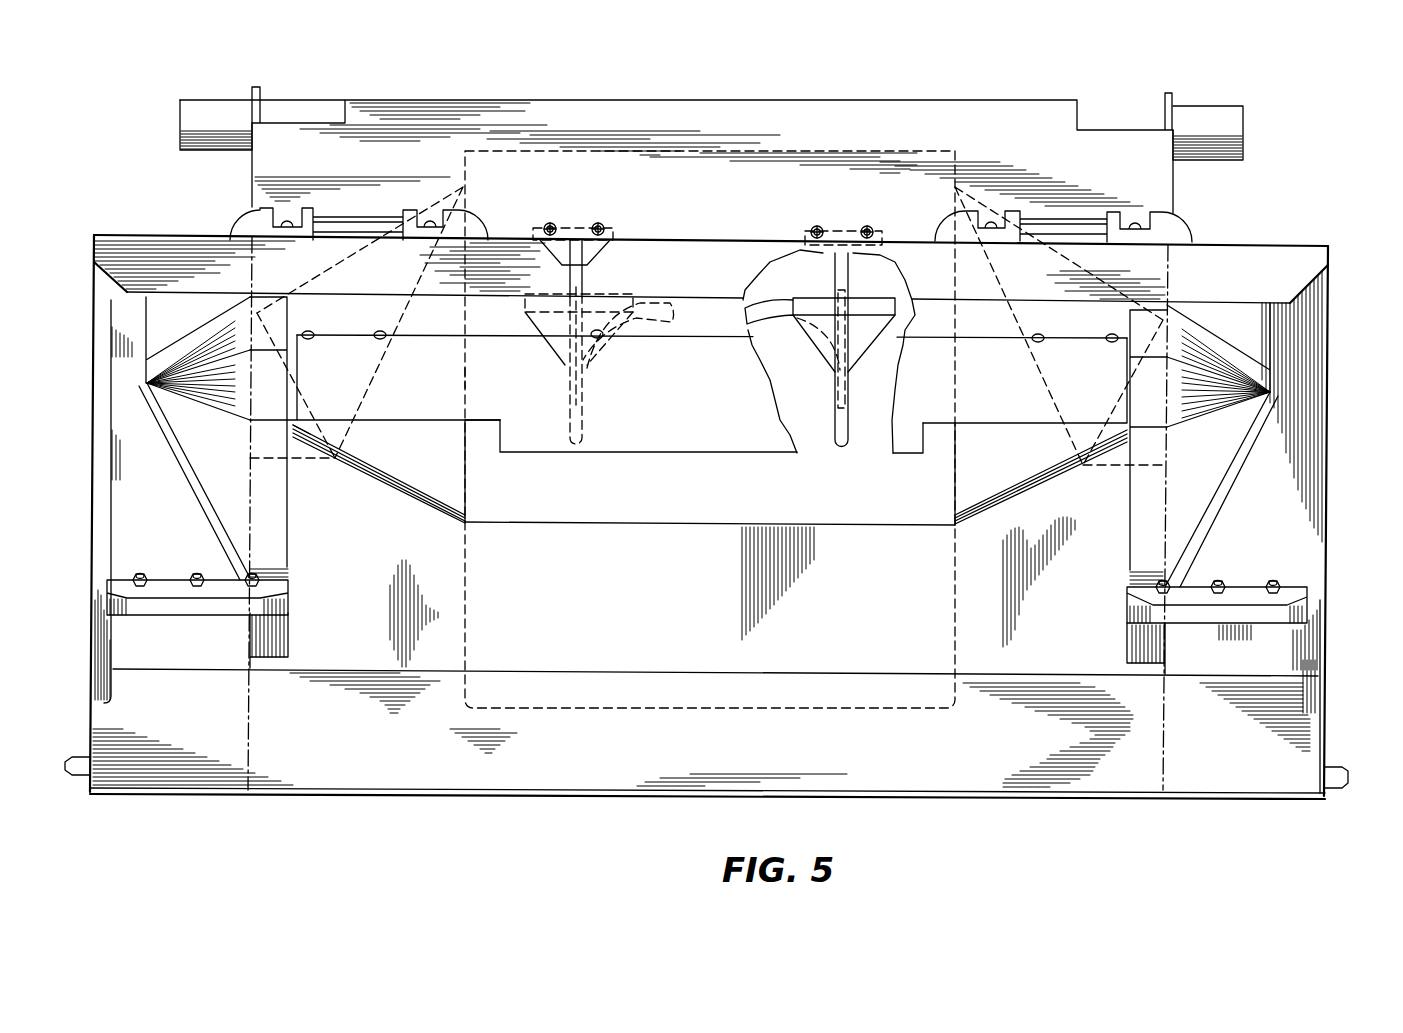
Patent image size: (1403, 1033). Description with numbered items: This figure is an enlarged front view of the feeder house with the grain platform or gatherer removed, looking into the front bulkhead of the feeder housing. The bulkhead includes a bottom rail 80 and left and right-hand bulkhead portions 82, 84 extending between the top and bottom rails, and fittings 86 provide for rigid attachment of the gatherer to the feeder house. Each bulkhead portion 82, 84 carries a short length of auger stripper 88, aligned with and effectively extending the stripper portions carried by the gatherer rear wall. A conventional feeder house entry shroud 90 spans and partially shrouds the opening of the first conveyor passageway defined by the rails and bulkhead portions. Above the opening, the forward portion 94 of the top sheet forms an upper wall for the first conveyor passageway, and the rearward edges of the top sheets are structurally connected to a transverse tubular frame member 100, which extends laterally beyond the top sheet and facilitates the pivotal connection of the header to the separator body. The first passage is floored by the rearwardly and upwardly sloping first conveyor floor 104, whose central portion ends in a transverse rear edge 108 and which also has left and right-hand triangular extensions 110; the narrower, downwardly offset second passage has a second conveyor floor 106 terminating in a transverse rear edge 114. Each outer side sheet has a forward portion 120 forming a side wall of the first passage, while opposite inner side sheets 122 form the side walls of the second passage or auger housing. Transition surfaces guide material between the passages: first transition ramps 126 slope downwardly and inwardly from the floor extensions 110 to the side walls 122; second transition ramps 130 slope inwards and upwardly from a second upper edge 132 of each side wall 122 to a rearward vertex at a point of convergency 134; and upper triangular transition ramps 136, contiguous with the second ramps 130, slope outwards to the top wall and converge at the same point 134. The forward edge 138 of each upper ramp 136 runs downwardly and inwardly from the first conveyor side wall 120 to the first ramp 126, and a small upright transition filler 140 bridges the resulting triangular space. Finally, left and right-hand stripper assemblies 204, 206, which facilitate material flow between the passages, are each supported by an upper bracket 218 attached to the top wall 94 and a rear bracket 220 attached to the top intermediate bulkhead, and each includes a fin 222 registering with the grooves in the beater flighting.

The bottom rail 80 is at (512, 796).
The left-hand bulkhead portion 82 is at (1328, 552).
The right-hand bulkhead portion 84 is at (90, 567).
The fittings 86 is at (238, 213).
The auger stripper 88 is at (175, 580).
The feeder house entry shroud 90 is at (183, 496).
The forward portion of top sheet 94 is at (711, 203).
The transverse tubular frame member 100 is at (1235, 141).
The first conveyor floor 104 is at (658, 616).
The second conveyor floor 106 is at (724, 493).
The transverse rear edge of first conveyor floor 108 is at (718, 524).
The triangular extensions 110 is at (297, 503).
The transverse rear edge of second conveyor floor 114 is at (830, 151).
The forward portion of outer side sheet 120 is at (256, 541).
The inner side sheets 122 is at (467, 480).
The first transition ramps 126 is at (420, 492).
The second transition ramps 130 is at (378, 450).
The second upper edge of second conveyor side wall 132 is at (466, 377).
The point of convergency 134 is at (463, 187).
The upper triangular transition ramps 136 is at (312, 327).
The forward edge of upper transition ramp 138 is at (307, 404).
The transition filler 140 is at (303, 432).
The left-hand stripper assembly 204 is at (852, 456).
The right-hand stripper assembly 206 is at (615, 353).
The upper bracket 218 is at (880, 247).
The rear bracket 220 is at (825, 297).
The fin 222 is at (832, 376).